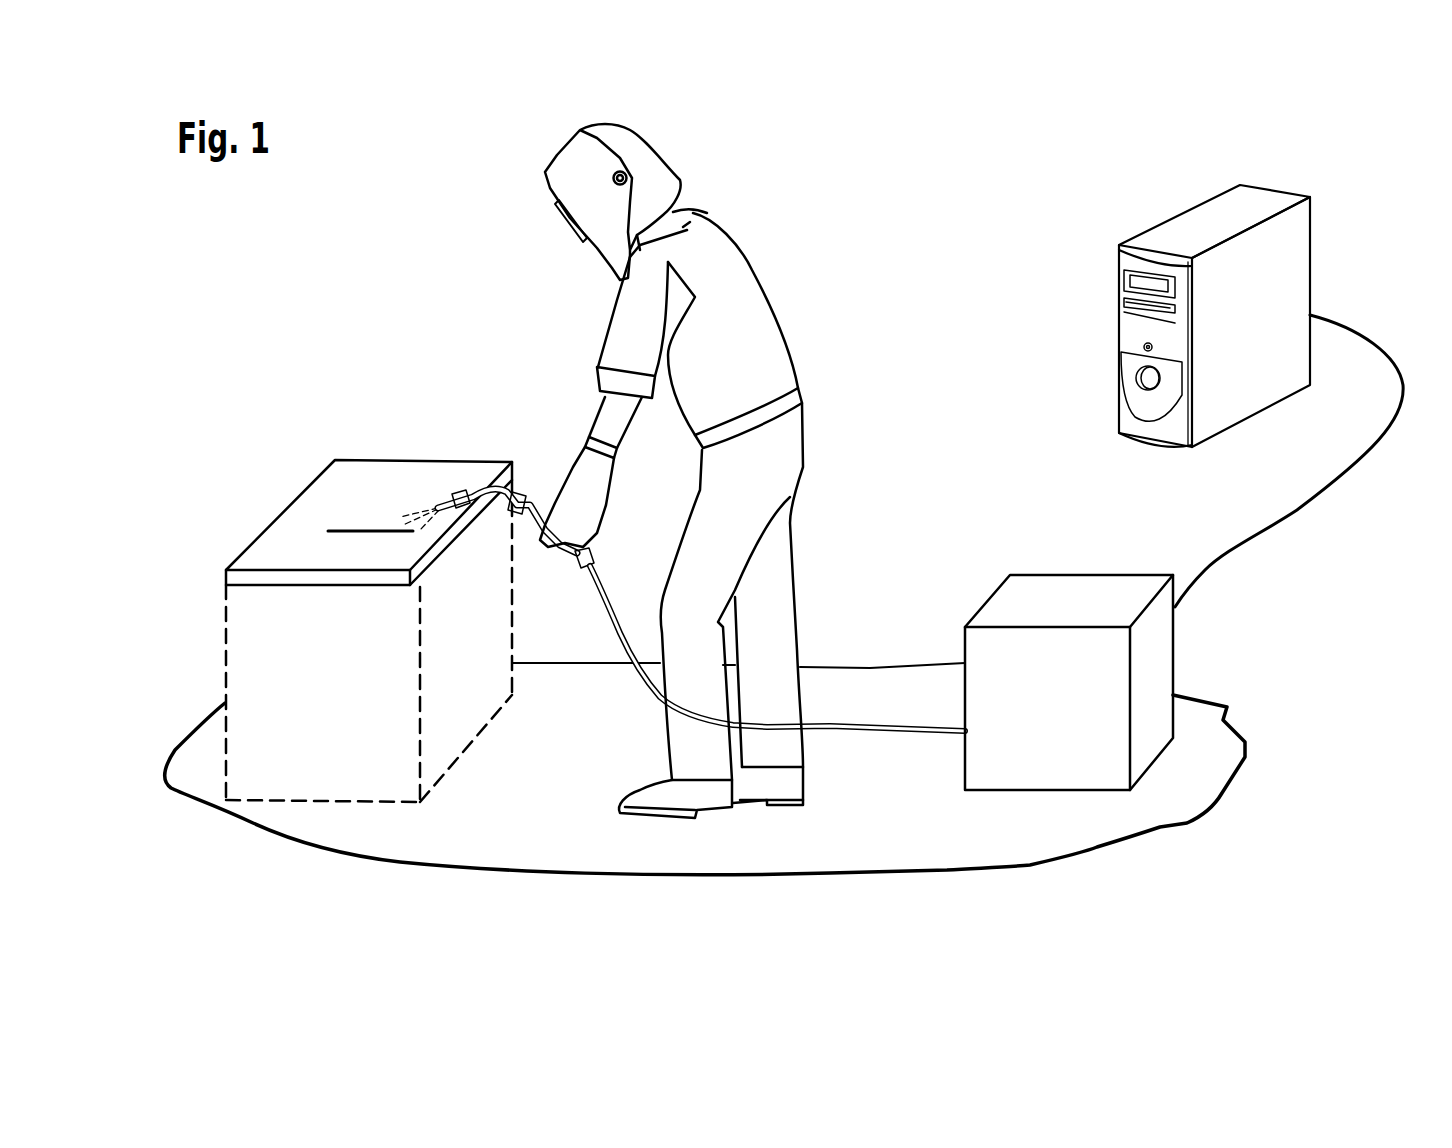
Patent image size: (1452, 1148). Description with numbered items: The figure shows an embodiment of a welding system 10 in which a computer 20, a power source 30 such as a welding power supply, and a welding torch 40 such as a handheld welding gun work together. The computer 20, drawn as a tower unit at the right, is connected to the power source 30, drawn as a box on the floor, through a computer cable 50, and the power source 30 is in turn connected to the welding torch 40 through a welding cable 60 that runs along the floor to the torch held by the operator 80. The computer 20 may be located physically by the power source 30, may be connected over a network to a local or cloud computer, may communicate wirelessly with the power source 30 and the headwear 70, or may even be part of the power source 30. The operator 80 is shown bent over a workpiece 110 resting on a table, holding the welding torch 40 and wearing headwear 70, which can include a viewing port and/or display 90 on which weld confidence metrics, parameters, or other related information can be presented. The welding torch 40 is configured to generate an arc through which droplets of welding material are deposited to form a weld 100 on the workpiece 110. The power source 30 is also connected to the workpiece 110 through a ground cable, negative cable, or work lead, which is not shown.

The welding system 10 is at (432, 212).
The computer 20 is at (1118, 330).
The power source 30 is at (1075, 580).
The welding torch 40 is at (540, 497).
The computer cable 50 is at (1293, 515).
The welding cable 60 is at (849, 722).
The headwear 70 is at (558, 148).
The operator 80 is at (723, 218).
The viewing port and/or display 90 is at (567, 226).
The weld 100 is at (393, 527).
The workpiece 110 is at (282, 510).